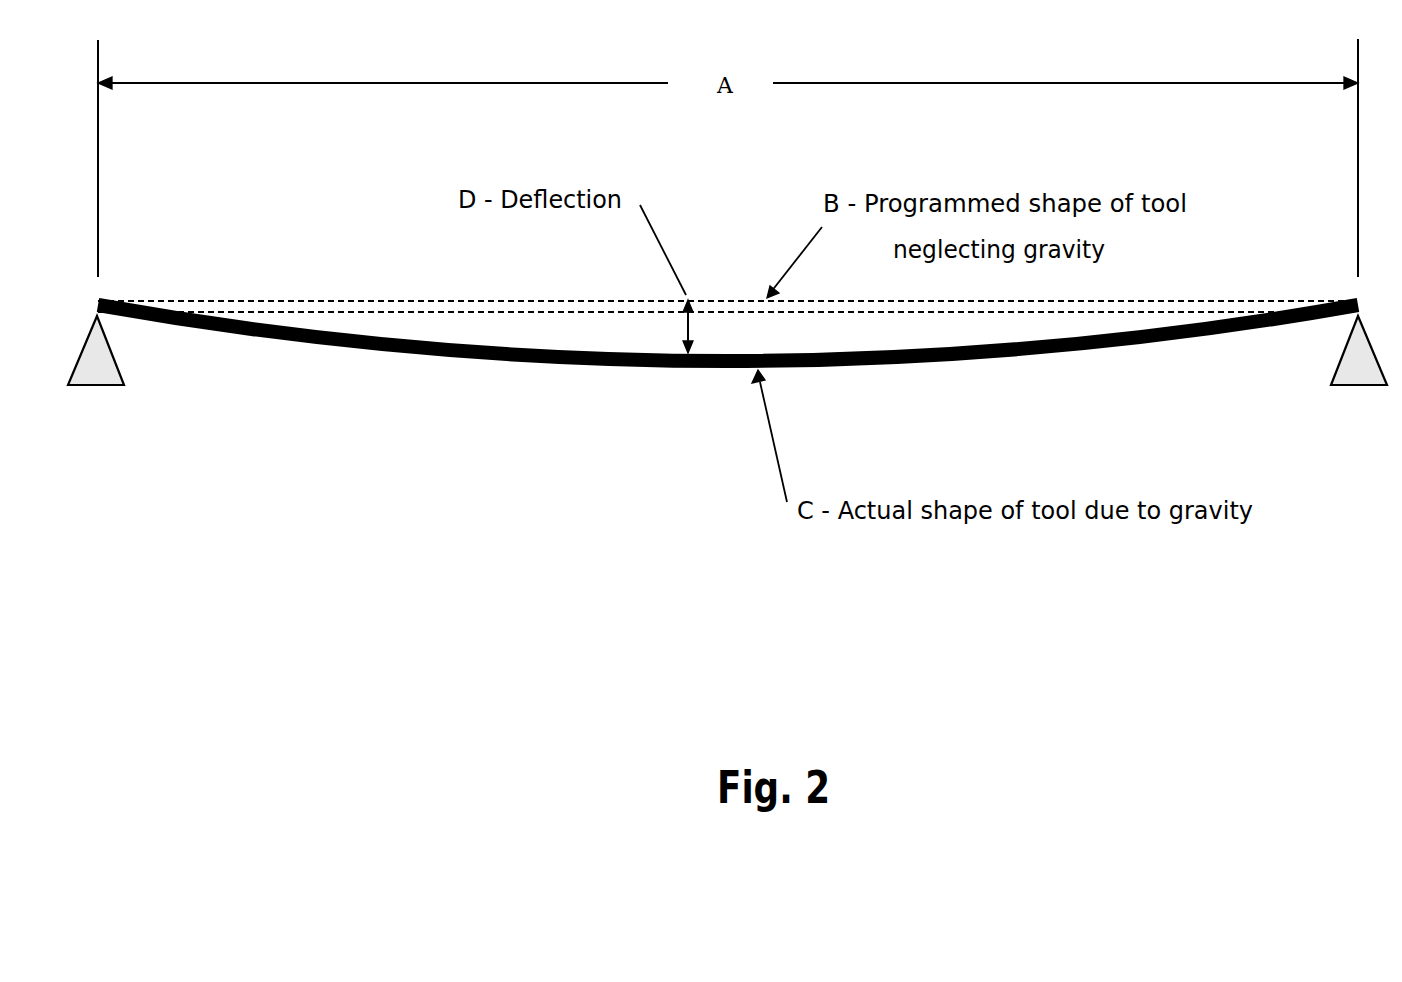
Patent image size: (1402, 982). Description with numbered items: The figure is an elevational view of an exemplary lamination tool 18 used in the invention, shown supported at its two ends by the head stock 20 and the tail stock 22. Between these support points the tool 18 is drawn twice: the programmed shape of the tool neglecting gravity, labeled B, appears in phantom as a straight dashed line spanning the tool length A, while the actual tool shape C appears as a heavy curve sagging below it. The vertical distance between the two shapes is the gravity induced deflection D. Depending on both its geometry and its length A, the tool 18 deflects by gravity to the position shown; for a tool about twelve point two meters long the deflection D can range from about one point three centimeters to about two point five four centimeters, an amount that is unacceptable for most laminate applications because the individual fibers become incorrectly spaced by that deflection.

The tool 18 is at (488, 362).
The head stock 20 is at (102, 370).
The tail stock 22 is at (1353, 375).